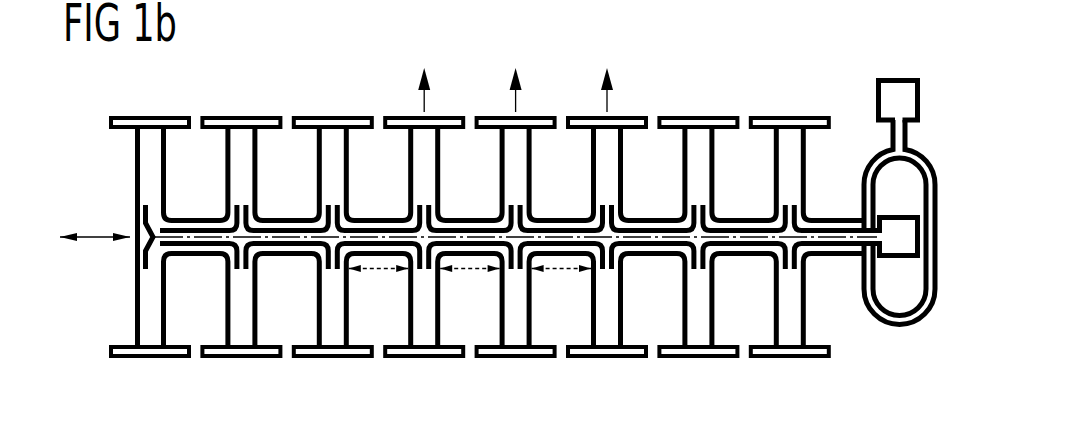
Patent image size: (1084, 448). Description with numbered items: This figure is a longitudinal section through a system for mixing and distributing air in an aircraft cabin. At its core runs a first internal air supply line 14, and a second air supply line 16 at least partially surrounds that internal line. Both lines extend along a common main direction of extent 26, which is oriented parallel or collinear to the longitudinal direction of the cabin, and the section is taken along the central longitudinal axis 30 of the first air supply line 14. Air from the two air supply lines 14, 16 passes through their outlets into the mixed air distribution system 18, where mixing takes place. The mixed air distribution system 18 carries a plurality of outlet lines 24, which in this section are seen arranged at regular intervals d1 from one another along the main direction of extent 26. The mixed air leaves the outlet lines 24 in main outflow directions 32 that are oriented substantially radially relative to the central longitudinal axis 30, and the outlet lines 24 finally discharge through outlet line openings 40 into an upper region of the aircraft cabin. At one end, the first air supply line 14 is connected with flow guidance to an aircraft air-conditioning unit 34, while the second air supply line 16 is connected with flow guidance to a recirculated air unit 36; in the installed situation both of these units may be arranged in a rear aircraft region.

The first internal air supply line 14 is at (196, 254).
The second air supply line 16 is at (197, 212).
The mixed air distribution system 18 is at (681, 310).
The outlet lines 24 is at (780, 172).
The main direction of extent 26 is at (97, 242).
The central longitudinal axis 30 is at (285, 236).
The main outflow directions 32 is at (419, 97).
The aircraft air-conditioning unit 34 is at (897, 230).
The recirculated air unit 36 is at (897, 92).
The outlet line openings 40 is at (697, 121).
The regular interval d1 is at (379, 272).